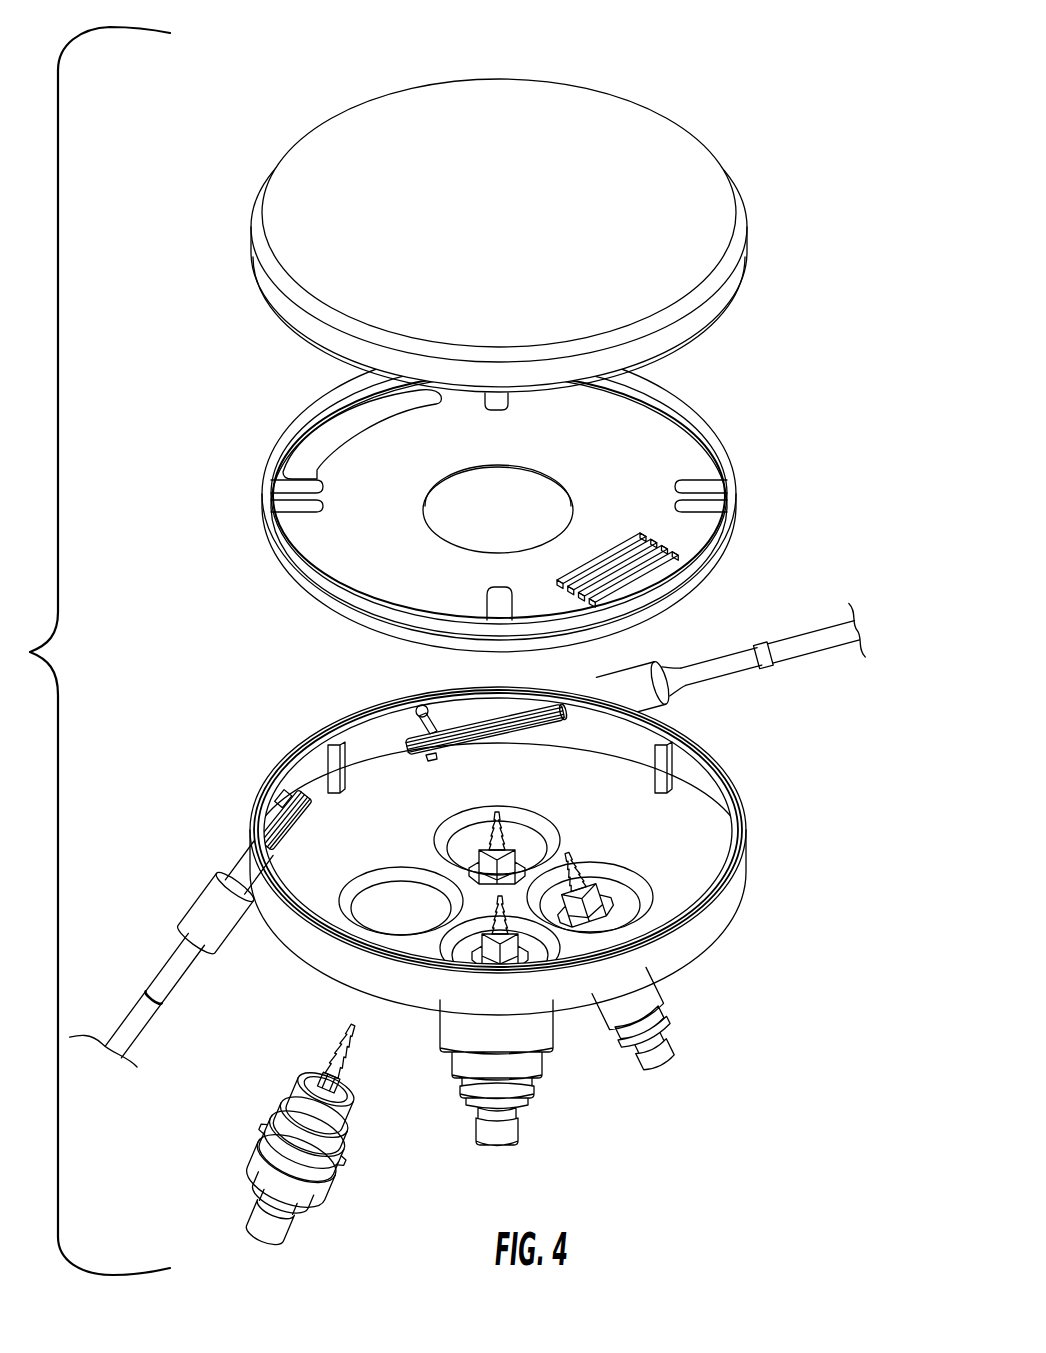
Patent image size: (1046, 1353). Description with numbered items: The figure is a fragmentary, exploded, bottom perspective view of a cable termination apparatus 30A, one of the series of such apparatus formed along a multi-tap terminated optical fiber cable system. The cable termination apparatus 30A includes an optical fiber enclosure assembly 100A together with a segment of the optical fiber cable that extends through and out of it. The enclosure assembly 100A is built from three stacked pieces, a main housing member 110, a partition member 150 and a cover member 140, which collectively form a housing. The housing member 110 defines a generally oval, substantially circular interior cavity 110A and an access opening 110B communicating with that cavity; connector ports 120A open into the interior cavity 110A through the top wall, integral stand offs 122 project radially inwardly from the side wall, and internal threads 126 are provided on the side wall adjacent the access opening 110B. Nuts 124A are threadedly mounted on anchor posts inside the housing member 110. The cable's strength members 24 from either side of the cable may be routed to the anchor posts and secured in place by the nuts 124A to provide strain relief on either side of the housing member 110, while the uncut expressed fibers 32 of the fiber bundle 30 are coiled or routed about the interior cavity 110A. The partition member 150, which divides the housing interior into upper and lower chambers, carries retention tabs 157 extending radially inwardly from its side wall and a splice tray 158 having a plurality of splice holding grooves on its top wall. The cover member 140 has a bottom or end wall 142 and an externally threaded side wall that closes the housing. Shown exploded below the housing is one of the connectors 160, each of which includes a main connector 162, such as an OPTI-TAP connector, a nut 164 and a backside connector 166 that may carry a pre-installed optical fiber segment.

The cable termination apparatus 30A is at (584, 62).
The cover member 140 is at (704, 124).
The bottom or end wall 142 is at (360, 140).
The optical fiber enclosure assembly 100A is at (768, 216).
The partition member 150 is at (730, 414).
The retention tabs 157 is at (706, 487).
The splice tray 158 is at (595, 562).
The internal threads 126 is at (683, 700).
The nuts 124A is at (418, 716).
The strength yarns 24 is at (470, 718).
The stand offs 122 is at (330, 768).
The expressed fibers 32 is at (290, 832).
The bundle of optical fibers 30 is at (465, 735).
The connector ports 120A is at (522, 835).
The interior cavity 110A is at (672, 830).
The access opening 110B is at (742, 868).
The main housing member 110 is at (740, 930).
The backside connector 166 is at (330, 1050).
The nut 164 is at (262, 1107).
The main connector 162 is at (330, 1190).
The connectors 160 is at (283, 1258).